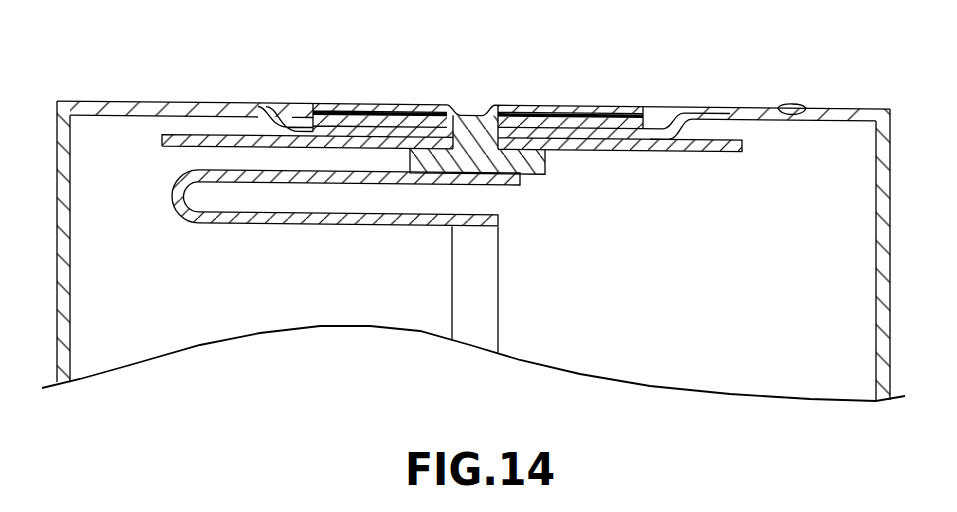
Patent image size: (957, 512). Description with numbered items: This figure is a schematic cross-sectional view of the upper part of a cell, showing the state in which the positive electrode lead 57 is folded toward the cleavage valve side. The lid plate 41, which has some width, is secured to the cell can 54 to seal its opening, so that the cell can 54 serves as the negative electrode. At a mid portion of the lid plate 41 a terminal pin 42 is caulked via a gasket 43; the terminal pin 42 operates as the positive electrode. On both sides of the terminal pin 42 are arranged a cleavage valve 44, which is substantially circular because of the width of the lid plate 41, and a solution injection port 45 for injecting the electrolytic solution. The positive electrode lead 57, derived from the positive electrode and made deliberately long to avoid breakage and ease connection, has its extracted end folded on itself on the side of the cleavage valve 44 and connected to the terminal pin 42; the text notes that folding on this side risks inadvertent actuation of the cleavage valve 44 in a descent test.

The lid plate 41 is at (712, 98).
The terminal pin 42 is at (490, 138).
The gasket 43 is at (598, 143).
The cleavage valve 44 is at (180, 102).
The solution injection port 45 is at (794, 104).
The cell can 54 is at (63, 163).
The positive electrode lead 57 is at (197, 220).